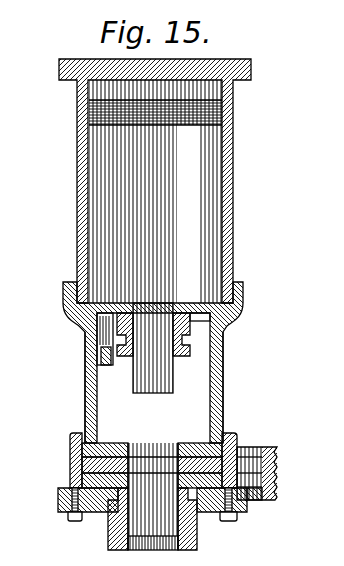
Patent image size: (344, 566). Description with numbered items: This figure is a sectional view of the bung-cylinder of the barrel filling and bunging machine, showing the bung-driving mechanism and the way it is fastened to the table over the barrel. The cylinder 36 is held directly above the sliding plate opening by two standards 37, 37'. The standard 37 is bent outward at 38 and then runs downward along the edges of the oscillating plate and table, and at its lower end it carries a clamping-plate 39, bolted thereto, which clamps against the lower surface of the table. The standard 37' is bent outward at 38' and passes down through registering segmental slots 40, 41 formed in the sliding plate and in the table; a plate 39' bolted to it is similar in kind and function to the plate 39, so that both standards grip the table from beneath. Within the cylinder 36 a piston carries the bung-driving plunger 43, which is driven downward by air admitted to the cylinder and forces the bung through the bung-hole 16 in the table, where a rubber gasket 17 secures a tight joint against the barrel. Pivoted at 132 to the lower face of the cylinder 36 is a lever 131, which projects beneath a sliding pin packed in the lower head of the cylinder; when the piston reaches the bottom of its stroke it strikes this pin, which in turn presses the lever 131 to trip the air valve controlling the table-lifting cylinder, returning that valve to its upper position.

The bung-hole 16 is at (106, 508).
The gasket 17 is at (108, 531).
The cylinder 36 is at (224, 218).
The standard 37 is at (72, 387).
The standard 37' is at (244, 387).
The outward bend 38 is at (56, 458).
The outward bend 38' is at (253, 451).
The clamping-plate 39 is at (59, 515).
The clamping-plate 39' is at (240, 518).
The segmental slot 40 is at (277, 455).
The segmental slot 41 is at (262, 498).
The bung-driving plunger 43 is at (157, 395).
The lever 131 is at (103, 357).
The pivot 132 is at (100, 337).